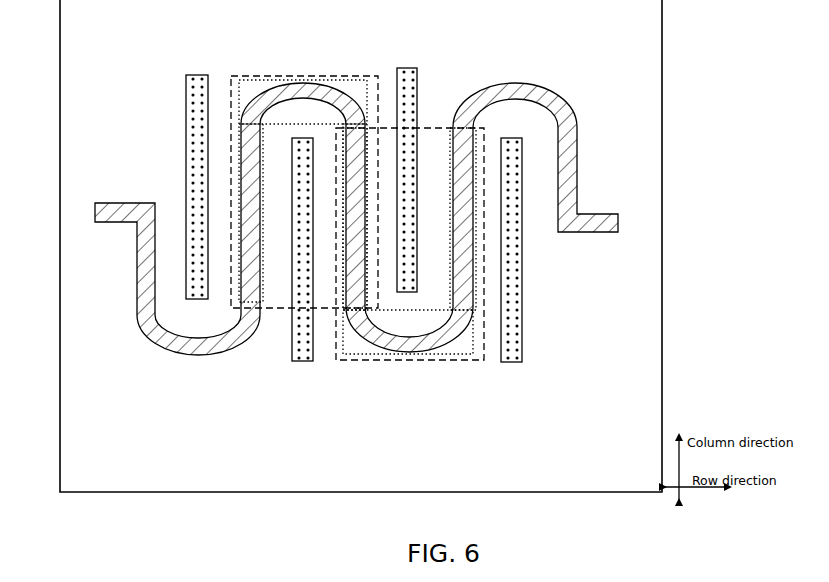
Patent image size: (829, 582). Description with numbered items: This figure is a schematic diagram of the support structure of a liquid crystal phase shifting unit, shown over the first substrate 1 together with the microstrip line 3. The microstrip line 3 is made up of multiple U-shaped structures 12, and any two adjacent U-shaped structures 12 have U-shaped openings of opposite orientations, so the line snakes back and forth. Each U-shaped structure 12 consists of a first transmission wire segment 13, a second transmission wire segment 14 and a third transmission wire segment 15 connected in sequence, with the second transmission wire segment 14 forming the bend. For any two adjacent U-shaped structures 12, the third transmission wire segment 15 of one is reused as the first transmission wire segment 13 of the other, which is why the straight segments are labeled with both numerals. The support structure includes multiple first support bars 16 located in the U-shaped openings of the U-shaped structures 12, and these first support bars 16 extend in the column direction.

The first substrate 1 is at (68, 151).
The microstrip line 3 is at (95, 209).
The U-shaped structure 12 is at (365, 77).
The first transmission wire segment 13 is at (255, 311).
The second transmission wire segment 14 is at (305, 81).
The third transmission wire segment 15 is at (353, 311).
The first support bar 16 is at (187, 95).